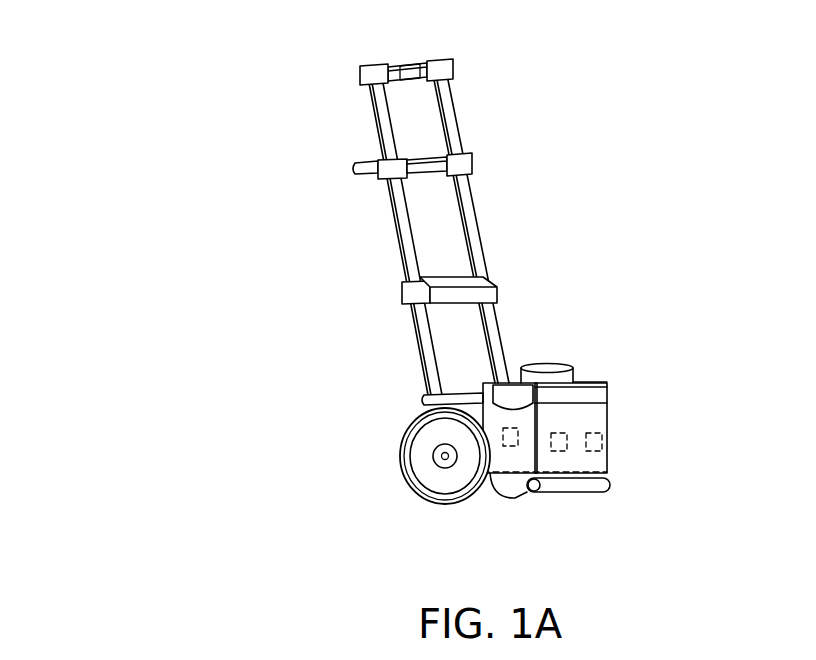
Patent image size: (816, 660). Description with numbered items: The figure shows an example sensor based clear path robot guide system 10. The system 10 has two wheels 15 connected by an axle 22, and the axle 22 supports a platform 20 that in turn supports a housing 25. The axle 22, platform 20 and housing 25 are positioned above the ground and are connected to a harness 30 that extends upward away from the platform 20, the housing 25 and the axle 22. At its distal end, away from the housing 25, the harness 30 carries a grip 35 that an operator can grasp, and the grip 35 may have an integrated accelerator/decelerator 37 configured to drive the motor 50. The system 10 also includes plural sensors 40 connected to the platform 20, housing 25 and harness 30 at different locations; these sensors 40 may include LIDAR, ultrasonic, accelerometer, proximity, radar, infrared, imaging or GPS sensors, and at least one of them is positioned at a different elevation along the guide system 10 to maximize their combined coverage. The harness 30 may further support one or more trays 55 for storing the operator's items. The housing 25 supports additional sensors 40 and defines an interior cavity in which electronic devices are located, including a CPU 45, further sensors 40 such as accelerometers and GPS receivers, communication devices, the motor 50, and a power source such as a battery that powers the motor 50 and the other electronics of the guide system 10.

The guide system 10 is at (138, 439).
The wheel 15 is at (402, 437).
The platform 20 is at (500, 497).
The axle 22 is at (434, 459).
The housing 25 is at (607, 458).
The harness 30 is at (369, 104).
The grip 35 is at (398, 63).
The accelerator/decelerator 37 is at (415, 63).
The sensors 40 is at (454, 68).
The CPU 45 is at (566, 428).
The motor 50 is at (433, 372).
The tray 55 is at (353, 168).